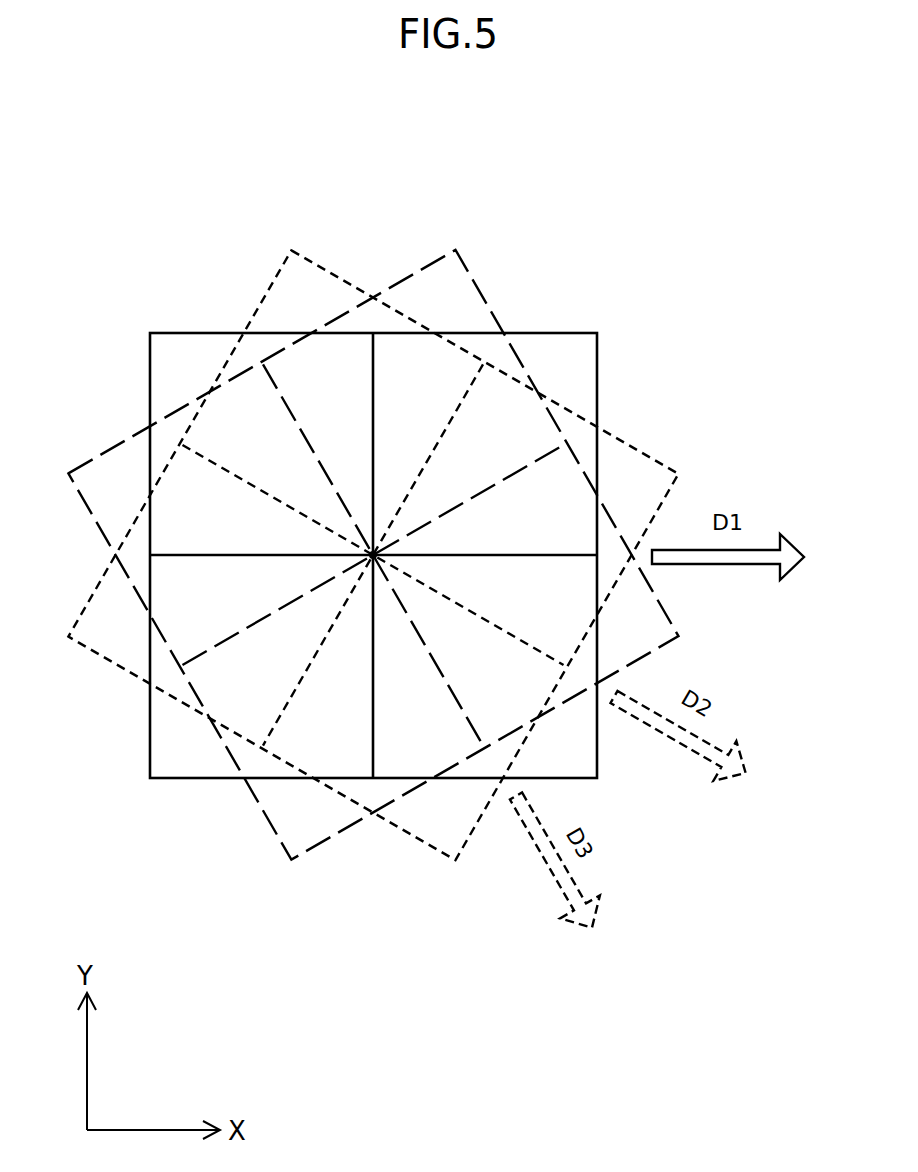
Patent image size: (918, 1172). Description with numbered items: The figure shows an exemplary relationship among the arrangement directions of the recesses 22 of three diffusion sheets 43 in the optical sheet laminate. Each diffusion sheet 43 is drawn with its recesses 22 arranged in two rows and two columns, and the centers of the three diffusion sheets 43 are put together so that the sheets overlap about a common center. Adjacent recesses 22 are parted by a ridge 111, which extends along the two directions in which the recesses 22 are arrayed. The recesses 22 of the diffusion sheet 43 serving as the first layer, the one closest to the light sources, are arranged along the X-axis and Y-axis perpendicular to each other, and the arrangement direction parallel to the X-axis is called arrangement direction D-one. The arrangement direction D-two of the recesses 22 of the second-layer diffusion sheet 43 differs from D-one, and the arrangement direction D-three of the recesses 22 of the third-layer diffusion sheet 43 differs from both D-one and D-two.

The light diffusion sheet 43 is at (180, 302).
The recess 22 is at (565, 362).
The ridge 111 is at (178, 780).